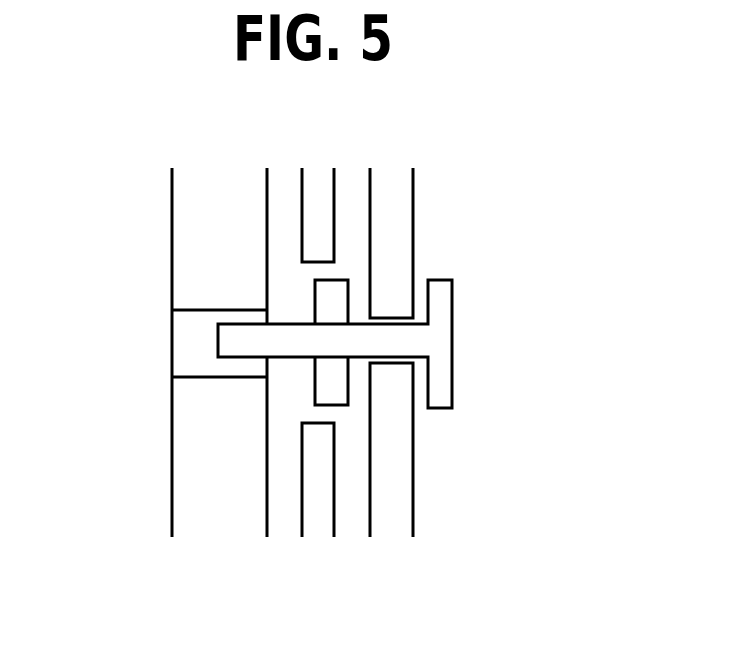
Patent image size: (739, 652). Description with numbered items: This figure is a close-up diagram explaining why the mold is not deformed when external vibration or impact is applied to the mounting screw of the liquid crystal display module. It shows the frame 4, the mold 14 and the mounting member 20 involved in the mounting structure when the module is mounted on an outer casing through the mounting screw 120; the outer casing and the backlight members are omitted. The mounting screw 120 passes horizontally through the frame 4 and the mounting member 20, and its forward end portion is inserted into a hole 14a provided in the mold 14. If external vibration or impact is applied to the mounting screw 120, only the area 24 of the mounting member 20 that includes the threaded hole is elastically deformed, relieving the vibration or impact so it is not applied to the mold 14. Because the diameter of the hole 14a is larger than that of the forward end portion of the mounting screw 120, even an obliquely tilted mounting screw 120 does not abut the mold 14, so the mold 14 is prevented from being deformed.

The frame 4 is at (400, 218).
The mold 14 is at (183, 251).
The hole 14a is at (183, 345).
The mounting member 20 is at (315, 177).
The area including the threaded hole 24 is at (348, 395).
The mounting screw 120 is at (452, 350).